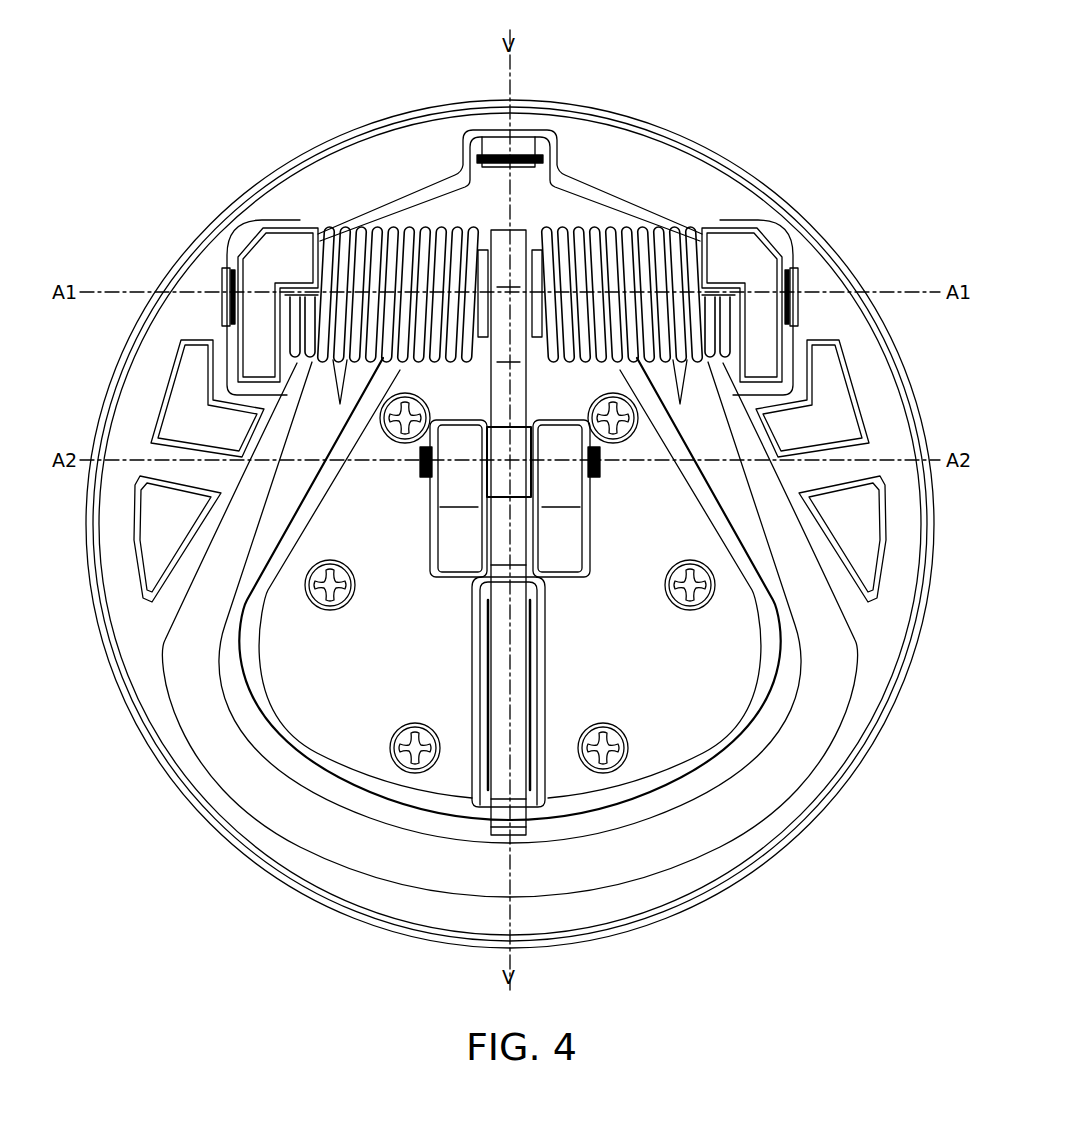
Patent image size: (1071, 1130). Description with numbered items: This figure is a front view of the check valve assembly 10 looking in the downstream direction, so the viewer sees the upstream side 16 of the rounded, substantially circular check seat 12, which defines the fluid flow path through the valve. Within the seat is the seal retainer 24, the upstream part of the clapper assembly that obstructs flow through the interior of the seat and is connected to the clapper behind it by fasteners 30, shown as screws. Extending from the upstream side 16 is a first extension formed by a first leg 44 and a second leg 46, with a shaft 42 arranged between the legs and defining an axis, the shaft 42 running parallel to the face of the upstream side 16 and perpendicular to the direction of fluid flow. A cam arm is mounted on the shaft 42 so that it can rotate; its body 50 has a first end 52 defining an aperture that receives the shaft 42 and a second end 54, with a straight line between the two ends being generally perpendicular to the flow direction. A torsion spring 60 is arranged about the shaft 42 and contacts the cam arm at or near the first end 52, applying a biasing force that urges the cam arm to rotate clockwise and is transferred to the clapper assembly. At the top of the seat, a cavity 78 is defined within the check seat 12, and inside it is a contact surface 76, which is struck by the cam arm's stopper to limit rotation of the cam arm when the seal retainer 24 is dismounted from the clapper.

The check valve assembly 10 is at (850, 64).
The check seat 12 is at (627, 172).
The upstream side 16 is at (893, 622).
The seal retainer 24 is at (688, 717).
The fasteners 30 is at (320, 598).
The shaft 42 is at (795, 270).
The first leg 44 is at (750, 258).
The second leg 46 is at (258, 265).
The body 50 is at (498, 635).
The first end 52 is at (520, 240).
The second end 54 is at (518, 783).
The torsion spring 60 is at (357, 262).
The contact surface 76 is at (527, 180).
The cavity 78 is at (476, 140).